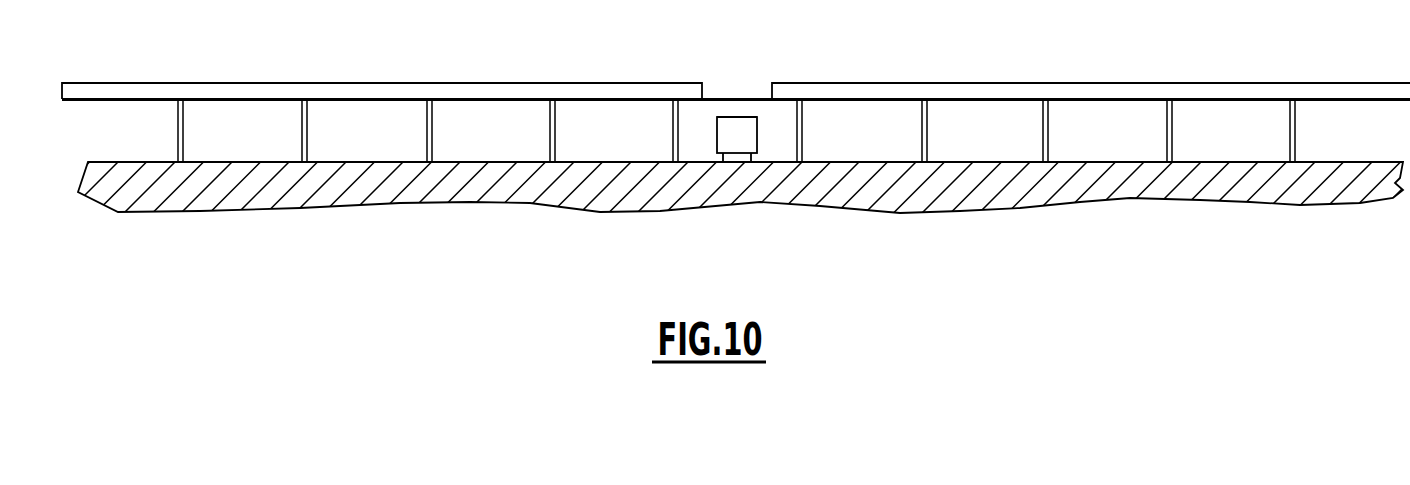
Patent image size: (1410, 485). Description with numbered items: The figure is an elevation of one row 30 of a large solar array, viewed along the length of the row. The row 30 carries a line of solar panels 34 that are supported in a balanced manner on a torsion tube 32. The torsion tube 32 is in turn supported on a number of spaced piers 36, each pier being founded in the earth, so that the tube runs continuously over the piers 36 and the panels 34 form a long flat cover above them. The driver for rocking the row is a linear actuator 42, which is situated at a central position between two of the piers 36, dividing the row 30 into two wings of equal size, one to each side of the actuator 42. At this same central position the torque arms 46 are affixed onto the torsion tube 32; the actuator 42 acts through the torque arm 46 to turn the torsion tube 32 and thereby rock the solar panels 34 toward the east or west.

The row of solar panels 30 is at (583, 59).
The torsion tube 32 is at (580, 100).
The solar panels 34 is at (377, 83).
The pier 36 is at (301, 135).
The linear actuator 42 is at (742, 128).
The torque arm 46 is at (732, 115).